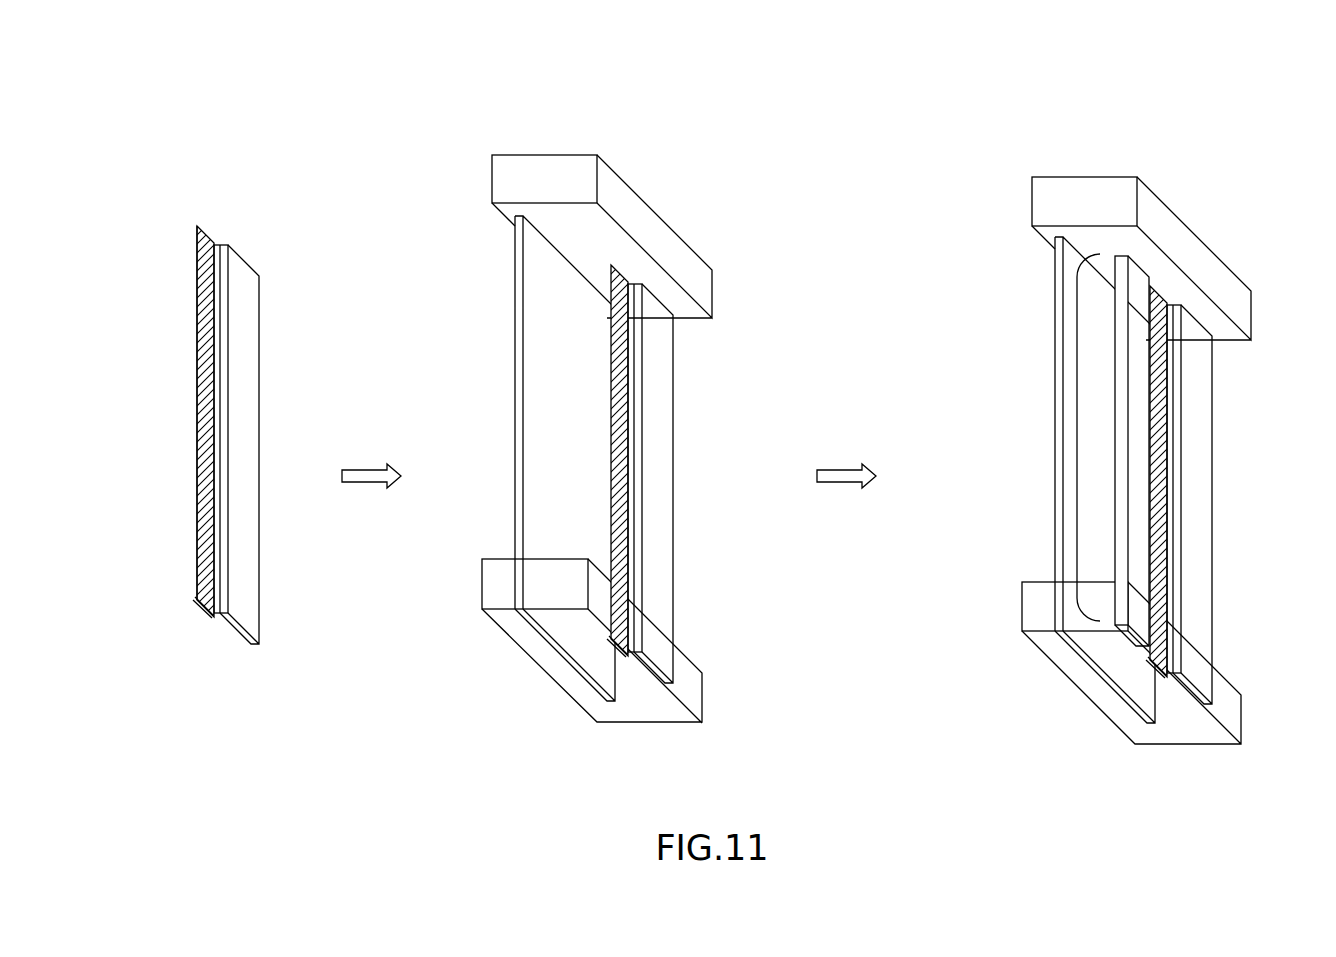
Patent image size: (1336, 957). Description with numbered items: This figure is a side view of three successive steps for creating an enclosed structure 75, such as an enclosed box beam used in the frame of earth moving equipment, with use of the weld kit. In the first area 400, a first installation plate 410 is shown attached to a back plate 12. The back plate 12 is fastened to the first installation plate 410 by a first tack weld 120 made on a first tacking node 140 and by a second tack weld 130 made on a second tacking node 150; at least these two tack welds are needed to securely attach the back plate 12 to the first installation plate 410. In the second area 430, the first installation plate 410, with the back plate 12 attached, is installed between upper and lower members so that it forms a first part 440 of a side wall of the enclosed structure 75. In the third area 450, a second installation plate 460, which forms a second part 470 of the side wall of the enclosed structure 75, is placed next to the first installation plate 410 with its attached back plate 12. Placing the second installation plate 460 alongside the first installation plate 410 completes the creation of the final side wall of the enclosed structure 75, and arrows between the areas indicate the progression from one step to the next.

The back plate 12 is at (195, 615).
The enclosed structure 75 is at (690, 243).
The first tack weld 120 is at (249, 421).
The second tack weld 130 is at (266, 429).
The first tacking node 140 is at (173, 321).
The second tacking node 150 is at (167, 508).
The area 400 is at (281, 142).
The first installation plate 410 is at (281, 444).
The area 430 is at (658, 142).
The first part 440 is at (732, 320).
The area 450 is at (1175, 142).
The second installation plate 460 is at (1123, 382).
The second part 470 is at (1077, 437).